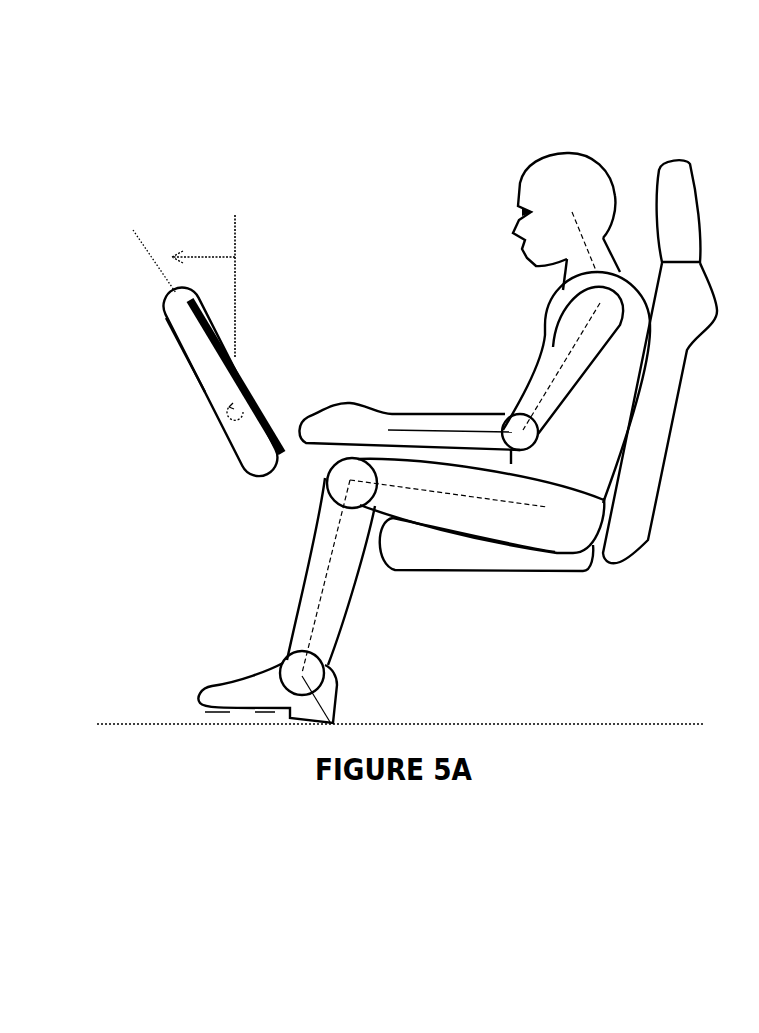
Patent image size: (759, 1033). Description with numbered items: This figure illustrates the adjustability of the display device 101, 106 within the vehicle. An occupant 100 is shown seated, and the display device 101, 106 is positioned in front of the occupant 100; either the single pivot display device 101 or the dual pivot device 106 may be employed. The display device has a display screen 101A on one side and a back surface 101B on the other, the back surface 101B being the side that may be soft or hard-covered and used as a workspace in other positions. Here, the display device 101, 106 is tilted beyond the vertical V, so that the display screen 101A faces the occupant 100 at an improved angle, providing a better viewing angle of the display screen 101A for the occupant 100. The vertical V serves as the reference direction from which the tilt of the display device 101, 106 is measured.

The occupant 100 is at (544, 156).
The single pivot display device 101 is at (182, 302).
The dual pivot device 106 is at (220, 381).
The display screen 101A is at (247, 382).
The back surface 101B is at (172, 343).
The vertical V is at (235, 228).